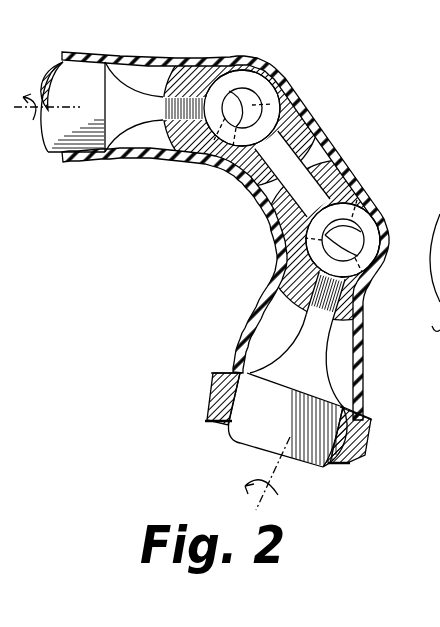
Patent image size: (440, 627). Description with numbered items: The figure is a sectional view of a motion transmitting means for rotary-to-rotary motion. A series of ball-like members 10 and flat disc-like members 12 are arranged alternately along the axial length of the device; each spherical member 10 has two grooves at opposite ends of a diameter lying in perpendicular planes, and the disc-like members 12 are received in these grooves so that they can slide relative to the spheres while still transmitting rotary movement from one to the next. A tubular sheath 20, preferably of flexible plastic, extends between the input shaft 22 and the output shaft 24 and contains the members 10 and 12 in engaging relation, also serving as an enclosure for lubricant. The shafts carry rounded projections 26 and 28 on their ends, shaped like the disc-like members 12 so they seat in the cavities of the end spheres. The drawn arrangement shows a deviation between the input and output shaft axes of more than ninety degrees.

The ball-like member 10 is at (257, 147).
The disc-like member 12 is at (255, 83).
The tubular sheath 20 is at (323, 140).
The input shaft 22 is at (257, 430).
The output shaft 24 is at (52, 152).
The projection 26 is at (317, 340).
The projection 28 is at (157, 102).